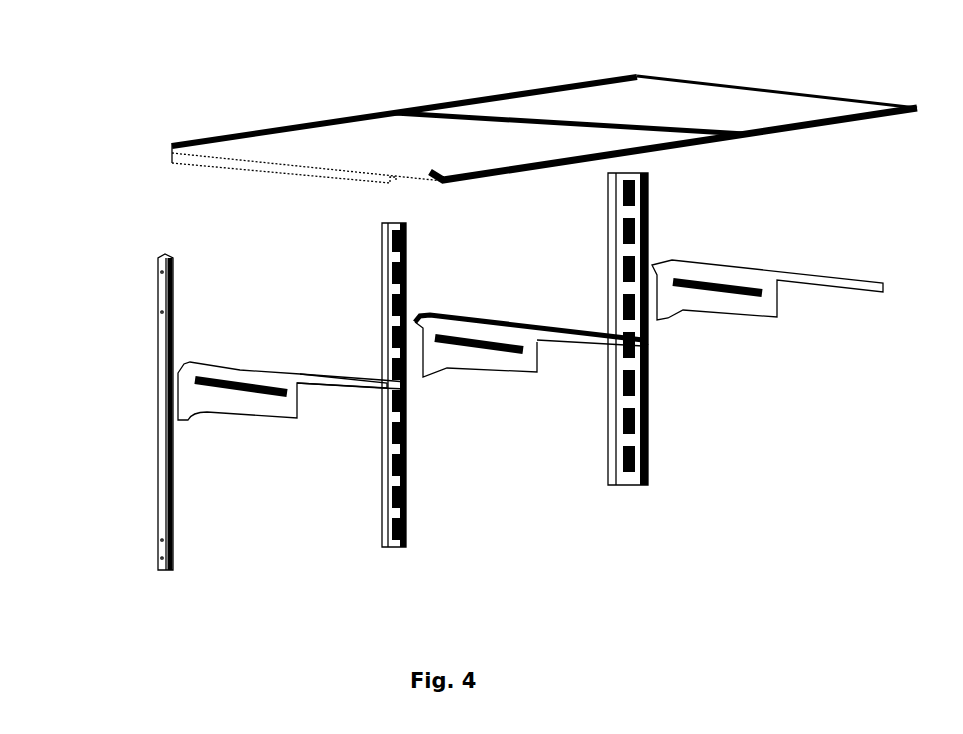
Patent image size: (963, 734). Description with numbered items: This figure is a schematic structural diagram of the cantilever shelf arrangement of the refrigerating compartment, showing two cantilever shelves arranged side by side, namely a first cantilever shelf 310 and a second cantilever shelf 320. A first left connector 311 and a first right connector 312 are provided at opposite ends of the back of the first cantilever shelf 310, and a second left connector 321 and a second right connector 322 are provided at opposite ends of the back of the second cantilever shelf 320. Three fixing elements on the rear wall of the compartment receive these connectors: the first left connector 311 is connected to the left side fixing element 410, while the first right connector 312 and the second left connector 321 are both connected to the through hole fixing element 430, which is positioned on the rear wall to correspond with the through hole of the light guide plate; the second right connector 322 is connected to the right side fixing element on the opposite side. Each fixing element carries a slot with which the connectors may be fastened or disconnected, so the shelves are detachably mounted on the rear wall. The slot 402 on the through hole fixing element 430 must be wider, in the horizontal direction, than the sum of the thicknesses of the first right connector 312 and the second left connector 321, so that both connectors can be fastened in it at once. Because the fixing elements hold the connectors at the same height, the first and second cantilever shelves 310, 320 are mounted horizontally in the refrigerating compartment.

The first cantilever shelf 310 is at (380, 137).
The second cantilever shelf 320 is at (792, 108).
The first left connector 311 is at (209, 412).
The first right connector 312 is at (483, 360).
The second left connector 321 is at (531, 340).
The second right connector 322 is at (740, 300).
The slot 402 is at (405, 466).
The left side fixing element 410 is at (680, 329).
The through hole fixing element 430 is at (442, 385).